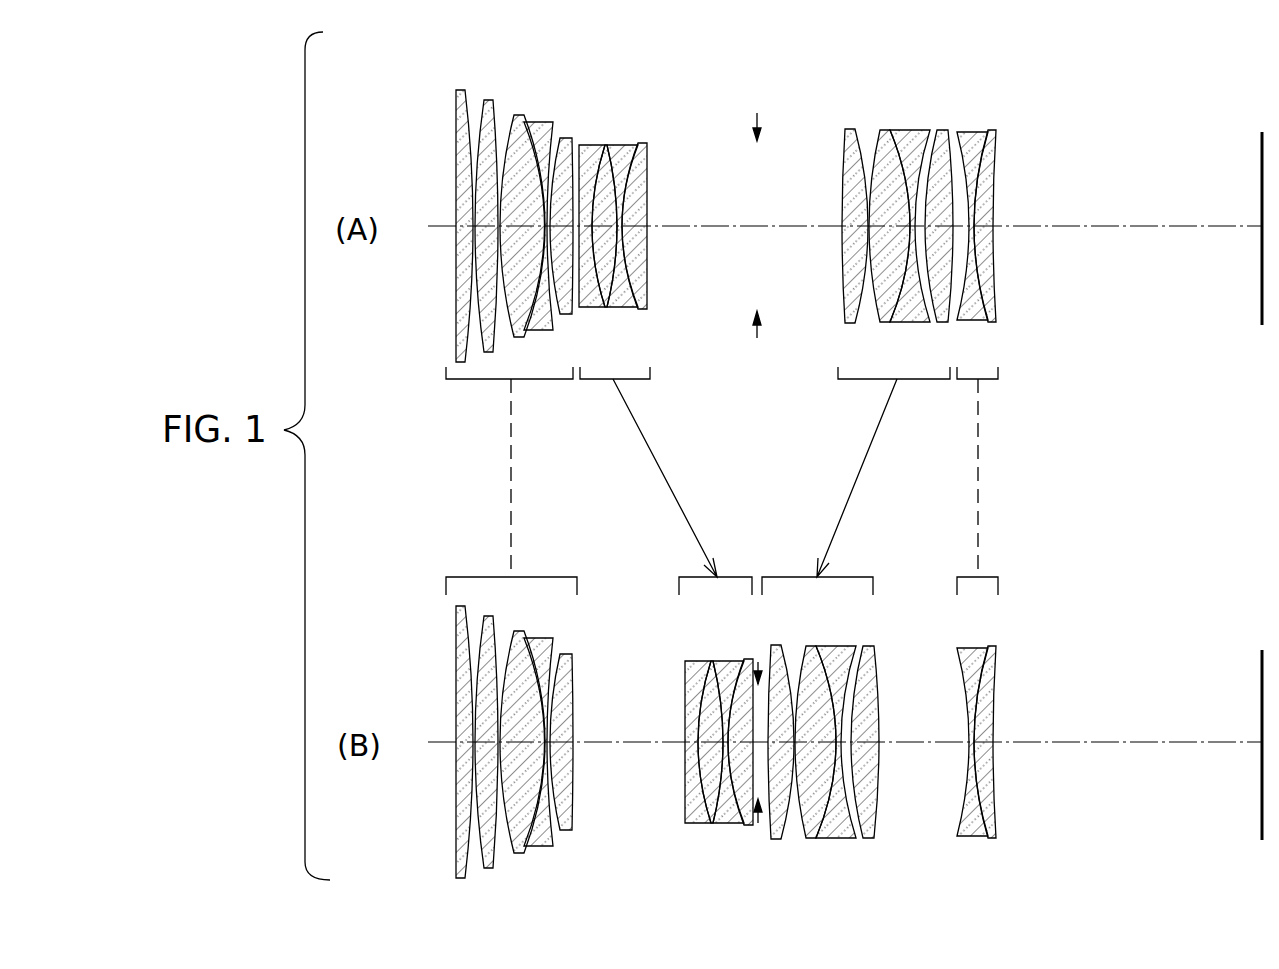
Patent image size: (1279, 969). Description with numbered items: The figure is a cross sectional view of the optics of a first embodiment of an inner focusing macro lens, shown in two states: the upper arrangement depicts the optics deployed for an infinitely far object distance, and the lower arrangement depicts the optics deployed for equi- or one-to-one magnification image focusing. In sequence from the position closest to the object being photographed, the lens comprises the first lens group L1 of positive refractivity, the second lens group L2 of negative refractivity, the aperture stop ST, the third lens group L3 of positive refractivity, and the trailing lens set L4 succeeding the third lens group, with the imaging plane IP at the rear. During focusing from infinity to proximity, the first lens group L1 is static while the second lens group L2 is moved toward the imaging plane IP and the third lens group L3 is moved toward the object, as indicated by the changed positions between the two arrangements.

The first lens group L1 is at (508, 455).
The second lens group L2 is at (665, 428).
The third lens group L3 is at (860, 435).
The trailing lens set L4 is at (977, 435).
The aperture stop ST is at (725, 464).
The imaging plane IP is at (1230, 486).